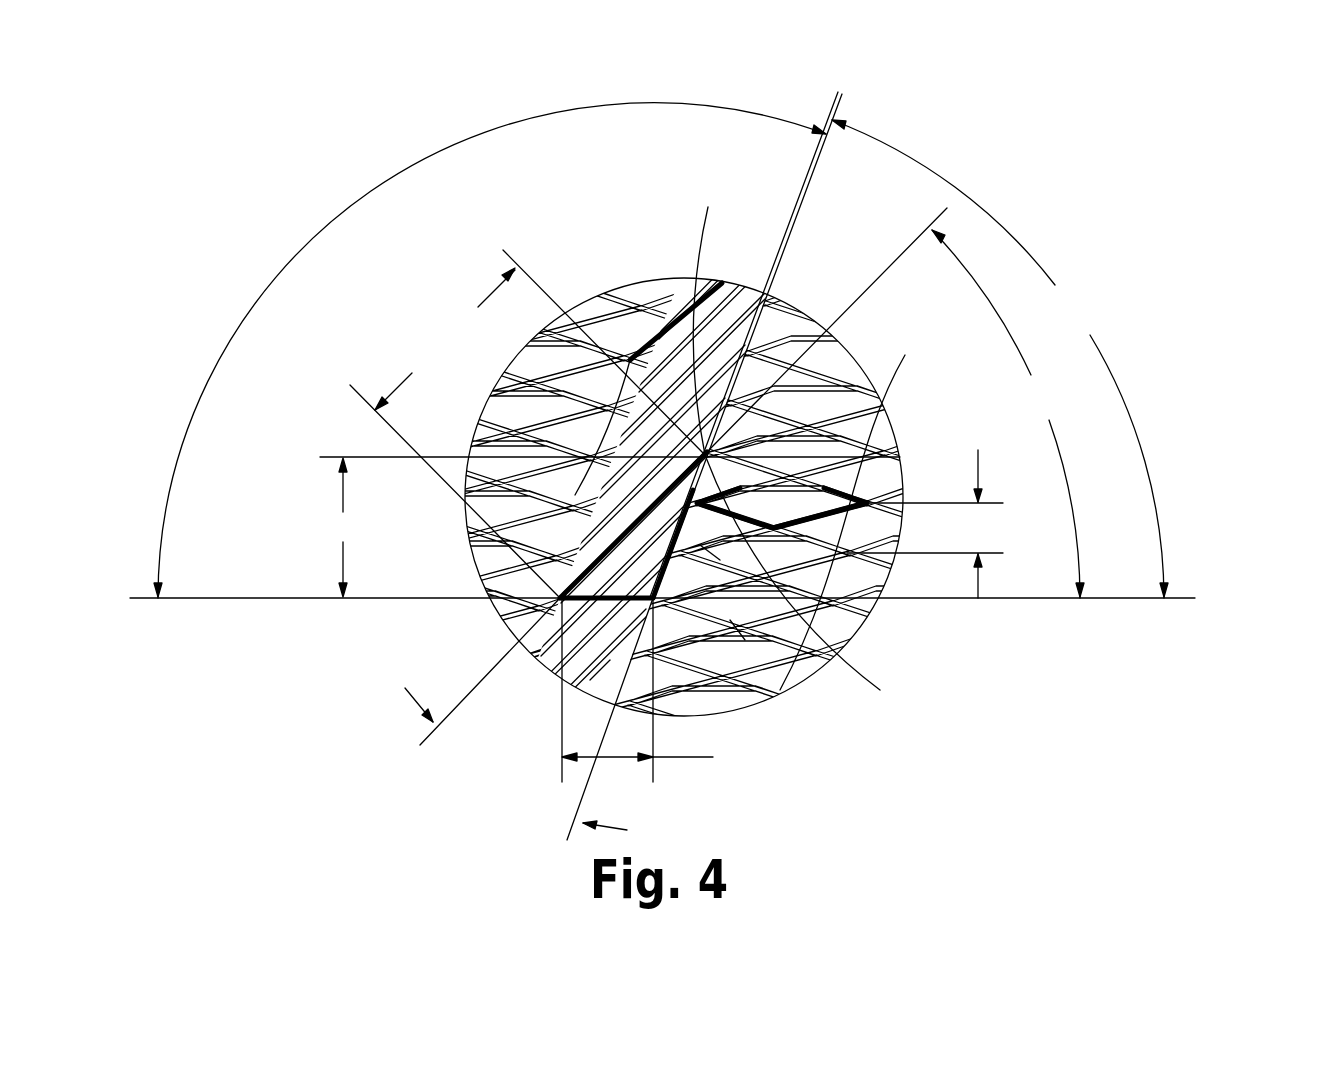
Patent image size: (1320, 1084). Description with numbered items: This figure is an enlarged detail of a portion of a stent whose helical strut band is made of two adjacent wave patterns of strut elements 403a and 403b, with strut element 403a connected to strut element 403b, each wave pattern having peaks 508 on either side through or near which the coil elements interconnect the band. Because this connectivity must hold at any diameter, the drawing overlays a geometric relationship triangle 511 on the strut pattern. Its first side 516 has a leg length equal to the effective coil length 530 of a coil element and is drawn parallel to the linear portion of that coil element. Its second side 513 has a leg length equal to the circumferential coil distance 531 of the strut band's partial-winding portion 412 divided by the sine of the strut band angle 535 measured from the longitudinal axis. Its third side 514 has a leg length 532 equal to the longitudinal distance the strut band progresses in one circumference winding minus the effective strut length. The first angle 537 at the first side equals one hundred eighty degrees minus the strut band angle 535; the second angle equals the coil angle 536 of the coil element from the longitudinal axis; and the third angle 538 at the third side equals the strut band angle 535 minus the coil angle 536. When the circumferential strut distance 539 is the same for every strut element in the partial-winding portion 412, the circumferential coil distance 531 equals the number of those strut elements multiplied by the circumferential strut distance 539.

The strut element 403a is at (778, 434).
The strut element 403b is at (811, 504).
The CCDn portion 412 is at (813, 455).
The peak 508 is at (840, 580).
The geometric relationship triangle 511 is at (745, 640).
The second side 513 is at (720, 560).
The third side 514 is at (590, 680).
The first side 516 is at (592, 362).
The effective length (Lc) 530 is at (430, 338).
The circumferential coil distance (CCD) 531 is at (300, 527).
The leg length (SS) 532 is at (775, 765).
The angle As 535 is at (1093, 292).
The angle Ac 536 is at (1067, 400).
The first angle 537 is at (397, 148).
The third angle 538 is at (330, 668).
The circumferential strut distance (Ps) 539 is at (1005, 532).